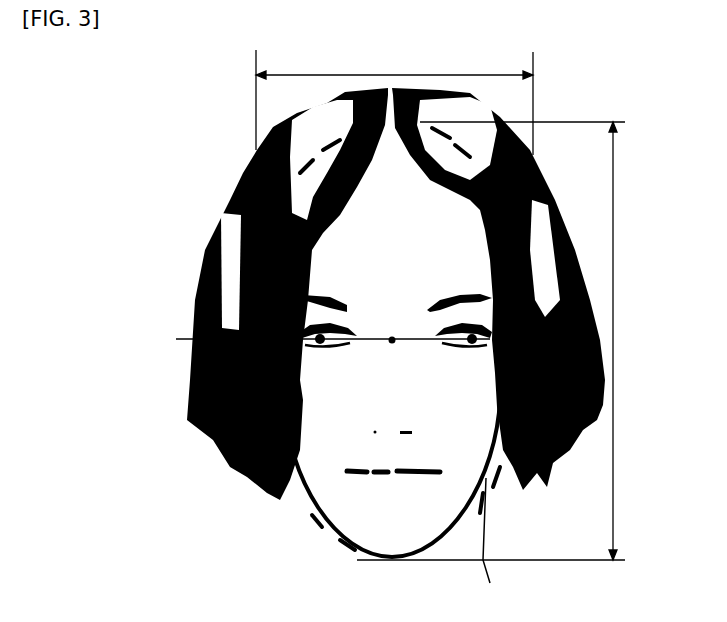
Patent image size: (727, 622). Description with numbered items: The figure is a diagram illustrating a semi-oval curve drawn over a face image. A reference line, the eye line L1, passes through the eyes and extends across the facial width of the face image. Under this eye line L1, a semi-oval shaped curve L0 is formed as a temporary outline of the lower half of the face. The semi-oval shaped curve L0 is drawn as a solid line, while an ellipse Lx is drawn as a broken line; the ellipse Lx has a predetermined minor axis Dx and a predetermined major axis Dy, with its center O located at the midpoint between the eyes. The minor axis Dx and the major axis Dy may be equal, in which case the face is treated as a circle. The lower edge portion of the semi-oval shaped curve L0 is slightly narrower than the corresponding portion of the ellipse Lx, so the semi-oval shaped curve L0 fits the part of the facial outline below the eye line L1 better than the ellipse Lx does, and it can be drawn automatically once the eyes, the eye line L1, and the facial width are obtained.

The minor axis Dx is at (394, 102).
The major axis Dy is at (504, 341).
The eye line L1 is at (316, 332).
The semi-oval shaped curve L0 is at (392, 477).
The ellipse Lx is at (395, 340).
The center O is at (399, 332).